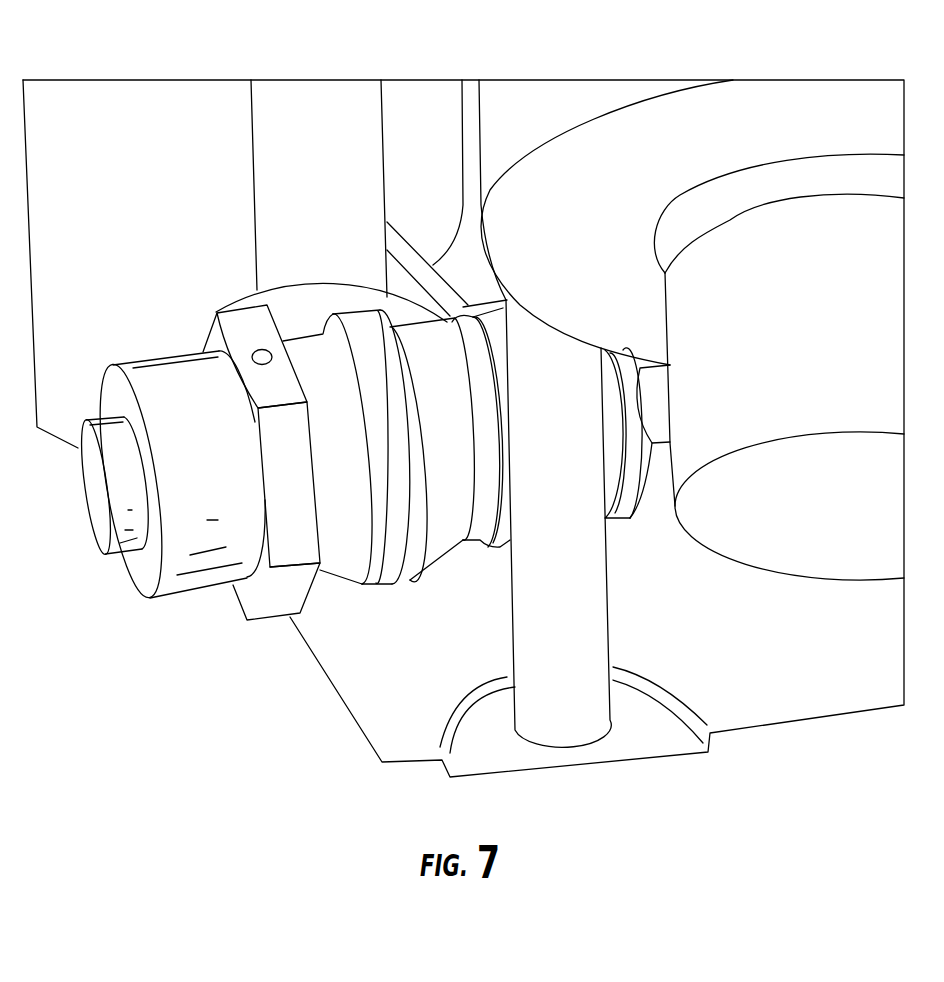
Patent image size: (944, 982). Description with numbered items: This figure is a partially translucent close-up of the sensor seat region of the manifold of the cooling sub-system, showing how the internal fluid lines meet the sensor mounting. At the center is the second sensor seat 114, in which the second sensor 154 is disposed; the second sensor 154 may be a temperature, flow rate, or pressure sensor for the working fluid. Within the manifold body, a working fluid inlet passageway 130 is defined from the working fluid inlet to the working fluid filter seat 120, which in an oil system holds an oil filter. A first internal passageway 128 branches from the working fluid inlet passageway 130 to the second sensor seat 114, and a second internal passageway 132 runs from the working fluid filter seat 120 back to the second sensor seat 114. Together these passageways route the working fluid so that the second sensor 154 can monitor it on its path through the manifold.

The second sensor seat 114 is at (391, 587).
The working fluid filter seat 120 is at (541, 108).
The first internal passageway 128 is at (394, 240).
The working fluid inlet passageway 130 is at (302, 103).
The second internal passageway 132 is at (658, 420).
The second sensor 154 is at (100, 505).